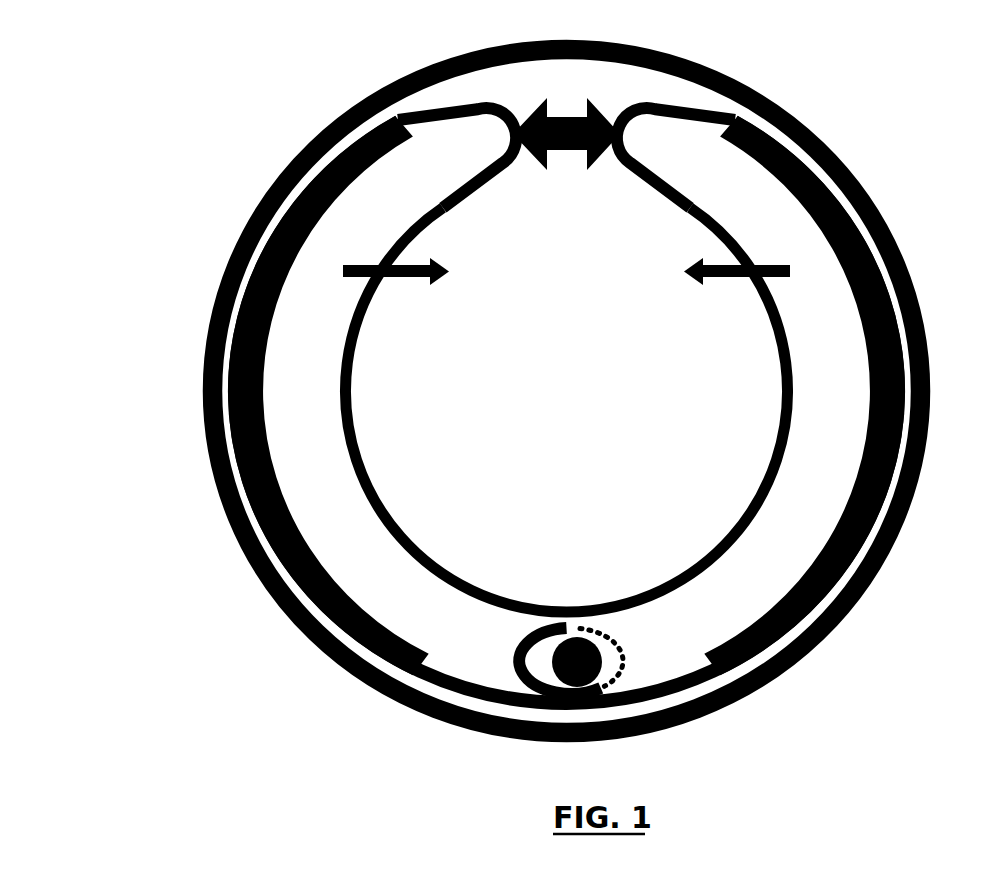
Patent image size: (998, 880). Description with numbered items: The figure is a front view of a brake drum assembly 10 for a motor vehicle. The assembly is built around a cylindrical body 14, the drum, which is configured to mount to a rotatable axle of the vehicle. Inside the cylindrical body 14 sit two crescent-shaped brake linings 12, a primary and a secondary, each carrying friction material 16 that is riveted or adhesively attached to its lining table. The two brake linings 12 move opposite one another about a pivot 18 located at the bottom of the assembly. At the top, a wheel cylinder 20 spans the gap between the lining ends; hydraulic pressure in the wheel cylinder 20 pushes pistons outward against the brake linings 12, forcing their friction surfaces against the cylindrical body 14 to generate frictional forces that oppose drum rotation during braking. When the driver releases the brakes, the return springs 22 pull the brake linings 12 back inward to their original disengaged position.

The brake drum assembly 10 is at (195, 57).
The brake lining 12 is at (322, 458).
The cylindrical body 14 is at (910, 253).
The friction material 16 is at (352, 599).
The pivot 18 is at (610, 661).
The wheel cylinder 20 is at (650, 134).
The return springs 22 is at (566, 273).